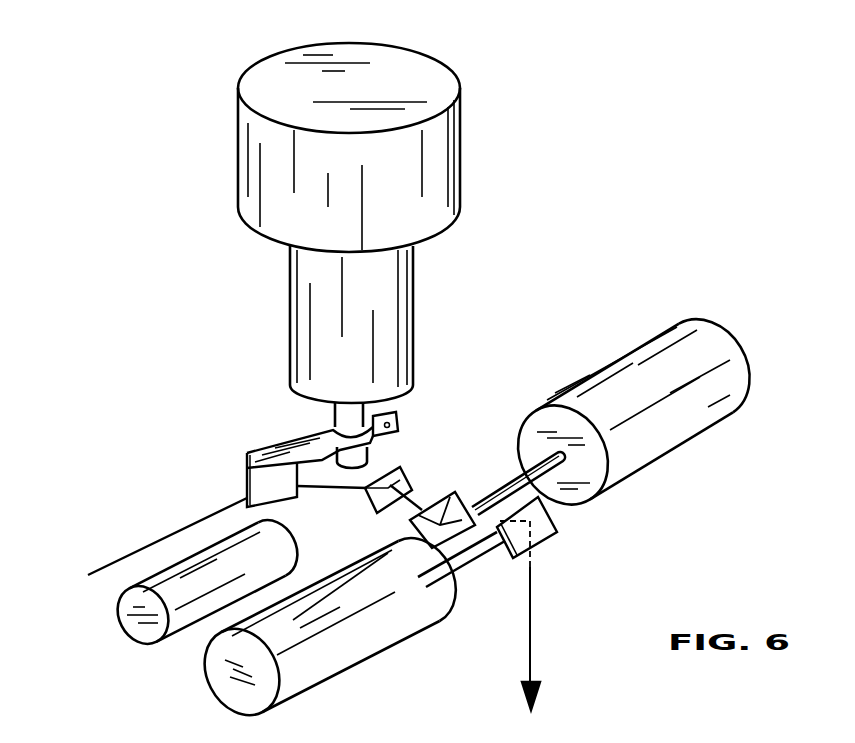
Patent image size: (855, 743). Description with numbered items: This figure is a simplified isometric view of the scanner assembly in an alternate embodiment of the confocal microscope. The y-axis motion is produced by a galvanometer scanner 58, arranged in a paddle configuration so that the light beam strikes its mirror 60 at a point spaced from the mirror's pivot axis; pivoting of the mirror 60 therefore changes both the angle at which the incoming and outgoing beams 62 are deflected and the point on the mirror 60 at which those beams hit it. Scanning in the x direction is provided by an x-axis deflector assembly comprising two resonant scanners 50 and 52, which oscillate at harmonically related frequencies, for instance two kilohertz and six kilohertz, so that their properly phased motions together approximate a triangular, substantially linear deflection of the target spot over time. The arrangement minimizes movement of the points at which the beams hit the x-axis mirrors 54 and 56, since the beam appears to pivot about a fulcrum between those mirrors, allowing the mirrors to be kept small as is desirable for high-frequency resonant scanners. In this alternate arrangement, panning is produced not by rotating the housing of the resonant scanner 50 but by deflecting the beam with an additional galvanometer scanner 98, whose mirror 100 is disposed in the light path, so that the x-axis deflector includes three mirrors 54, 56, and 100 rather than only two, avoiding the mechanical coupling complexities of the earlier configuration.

The resonant scanner 50 is at (728, 388).
The resonant scanner 52 is at (177, 617).
The x-axis mirror 54 is at (447, 492).
The x-axis mirror 56 is at (407, 473).
The galvanometer scanner 58 is at (440, 148).
The mirror 60 is at (252, 481).
The incoming and outgoing beams 62 is at (180, 528).
The galvanometer scanner 98 is at (410, 620).
The mirror 100 is at (543, 535).